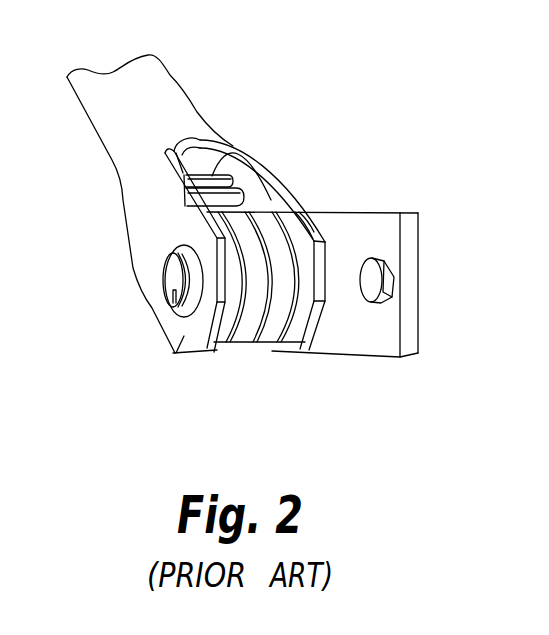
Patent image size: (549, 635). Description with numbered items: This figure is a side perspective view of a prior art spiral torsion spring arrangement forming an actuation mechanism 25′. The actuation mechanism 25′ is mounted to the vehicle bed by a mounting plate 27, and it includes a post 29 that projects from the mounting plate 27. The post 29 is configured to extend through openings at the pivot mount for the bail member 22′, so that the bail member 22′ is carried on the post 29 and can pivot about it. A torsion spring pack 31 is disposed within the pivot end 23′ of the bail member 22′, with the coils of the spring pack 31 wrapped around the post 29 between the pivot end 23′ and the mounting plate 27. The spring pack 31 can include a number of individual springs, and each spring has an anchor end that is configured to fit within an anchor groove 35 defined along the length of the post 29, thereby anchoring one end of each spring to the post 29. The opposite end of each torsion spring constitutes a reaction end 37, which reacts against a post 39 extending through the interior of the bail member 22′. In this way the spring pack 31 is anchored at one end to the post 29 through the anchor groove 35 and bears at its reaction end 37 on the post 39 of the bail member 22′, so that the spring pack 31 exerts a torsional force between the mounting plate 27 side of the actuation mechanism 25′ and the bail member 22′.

The bail member 22′ is at (158, 80).
The pivot end 23′ is at (173, 355).
The actuation mechanism 25′ is at (303, 207).
The mounting plate 27 is at (373, 227).
The post 29 is at (164, 268).
The torsion spring pack 31 is at (236, 269).
The anchor groove 35 is at (164, 298).
The reaction end 37 is at (228, 177).
The post 39 is at (243, 203).